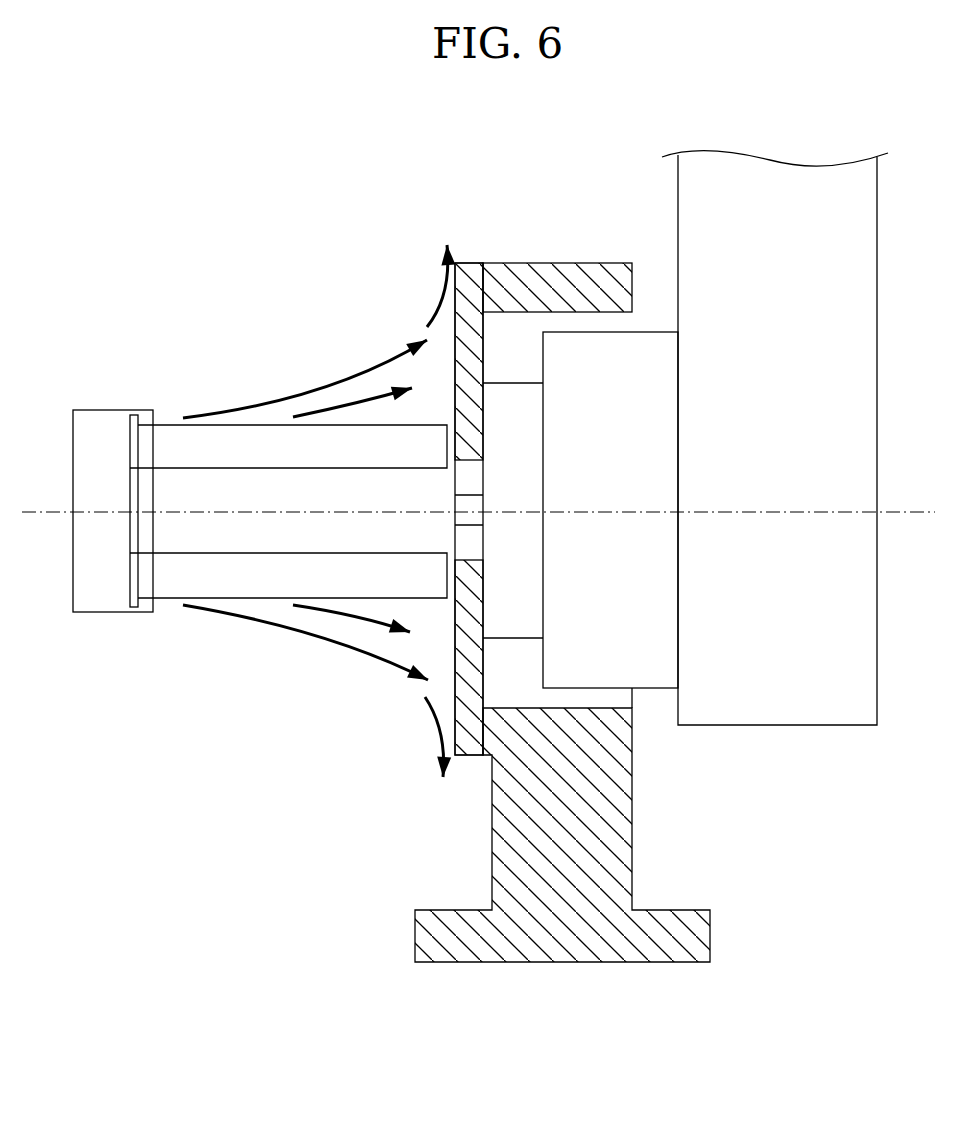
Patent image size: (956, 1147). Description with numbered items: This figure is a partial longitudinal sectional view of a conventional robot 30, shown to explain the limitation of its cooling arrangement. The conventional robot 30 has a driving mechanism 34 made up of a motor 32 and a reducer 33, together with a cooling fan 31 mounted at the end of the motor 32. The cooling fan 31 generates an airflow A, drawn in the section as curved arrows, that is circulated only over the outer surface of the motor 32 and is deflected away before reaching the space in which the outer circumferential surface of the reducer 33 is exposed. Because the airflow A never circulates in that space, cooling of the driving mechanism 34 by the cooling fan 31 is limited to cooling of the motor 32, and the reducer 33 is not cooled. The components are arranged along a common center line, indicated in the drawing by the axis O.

The conventional robot 30 is at (232, 253).
The cooling fan 31 is at (101, 410).
The motor 32 is at (170, 422).
The reducer 33 is at (528, 363).
The driving mechanism 34 is at (388, 362).
The axis O is at (48, 510).
The airflow A is at (442, 272).